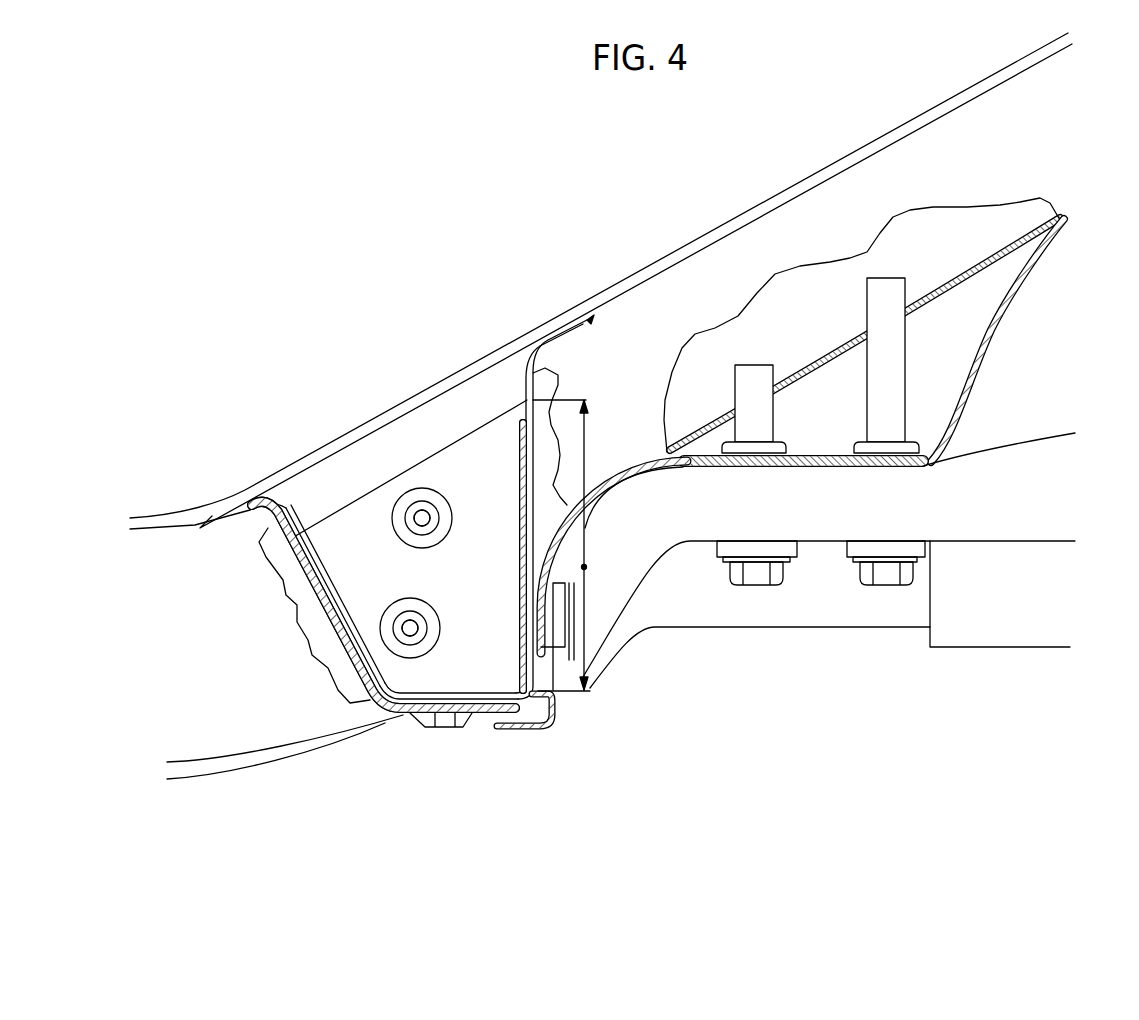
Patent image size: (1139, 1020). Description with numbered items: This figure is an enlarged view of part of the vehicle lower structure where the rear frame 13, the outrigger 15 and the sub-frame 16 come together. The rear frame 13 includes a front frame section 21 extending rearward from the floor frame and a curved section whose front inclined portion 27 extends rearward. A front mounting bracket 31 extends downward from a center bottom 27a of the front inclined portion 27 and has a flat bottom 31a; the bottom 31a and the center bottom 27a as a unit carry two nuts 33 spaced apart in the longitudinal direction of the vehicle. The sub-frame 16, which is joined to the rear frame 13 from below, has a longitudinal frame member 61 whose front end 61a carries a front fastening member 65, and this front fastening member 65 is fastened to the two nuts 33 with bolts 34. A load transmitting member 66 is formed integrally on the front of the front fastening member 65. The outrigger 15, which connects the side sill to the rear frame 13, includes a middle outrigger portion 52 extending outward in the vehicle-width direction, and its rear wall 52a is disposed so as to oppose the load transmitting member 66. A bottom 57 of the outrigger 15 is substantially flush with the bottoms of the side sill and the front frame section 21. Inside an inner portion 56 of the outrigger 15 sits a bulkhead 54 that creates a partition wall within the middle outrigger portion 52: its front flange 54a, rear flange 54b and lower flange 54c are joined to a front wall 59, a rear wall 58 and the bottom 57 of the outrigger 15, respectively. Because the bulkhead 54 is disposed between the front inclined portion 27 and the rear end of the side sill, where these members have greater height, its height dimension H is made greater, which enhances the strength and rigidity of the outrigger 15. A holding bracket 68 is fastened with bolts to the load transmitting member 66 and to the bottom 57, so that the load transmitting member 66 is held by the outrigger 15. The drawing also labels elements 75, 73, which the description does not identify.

The rear frame 13 is at (603, 237).
The front inclined portion 27 is at (718, 228).
The center bottom of the front inclined portion 27a is at (945, 278).
The front mounting bracket 31 is at (990, 330).
The bottom of the front mounting bracket 31a is at (822, 468).
The nut 33 is at (775, 405).
The bolt 34 is at (760, 575).
The front fastening member 65 is at (723, 548).
The longitudinal frame member 61 is at (1050, 485).
The front end of the left longitudinal frame member 61a is at (962, 490).
The sub-frame 16 is at (1031, 650).
The load transmitting member 66 is at (556, 512).
The bulkhead 54 is at (422, 507).
The front flange 54a is at (325, 592).
The rear flange 54b is at (520, 578).
The lower flange 54c is at (443, 693).
The inner portion of the outrigger 56 is at (431, 585).
The bottom of the outrigger 57 is at (430, 727).
The rear wall of the outrigger 58 is at (533, 463).
The rear wall of the middle outrigger portion 52a is at (533, 463).
The outrigger 15 is at (322, 624).
The middle outrigger portion 52 is at (322, 624).
The front wall of the outrigger 59 is at (298, 588).
The holding bracket 68 is at (520, 733).
The bolt 75 is at (526, 530).
The weld nut 73 is at (526, 530).
The front frame section 21 is at (203, 747).
The height dimension H is at (585, 566).